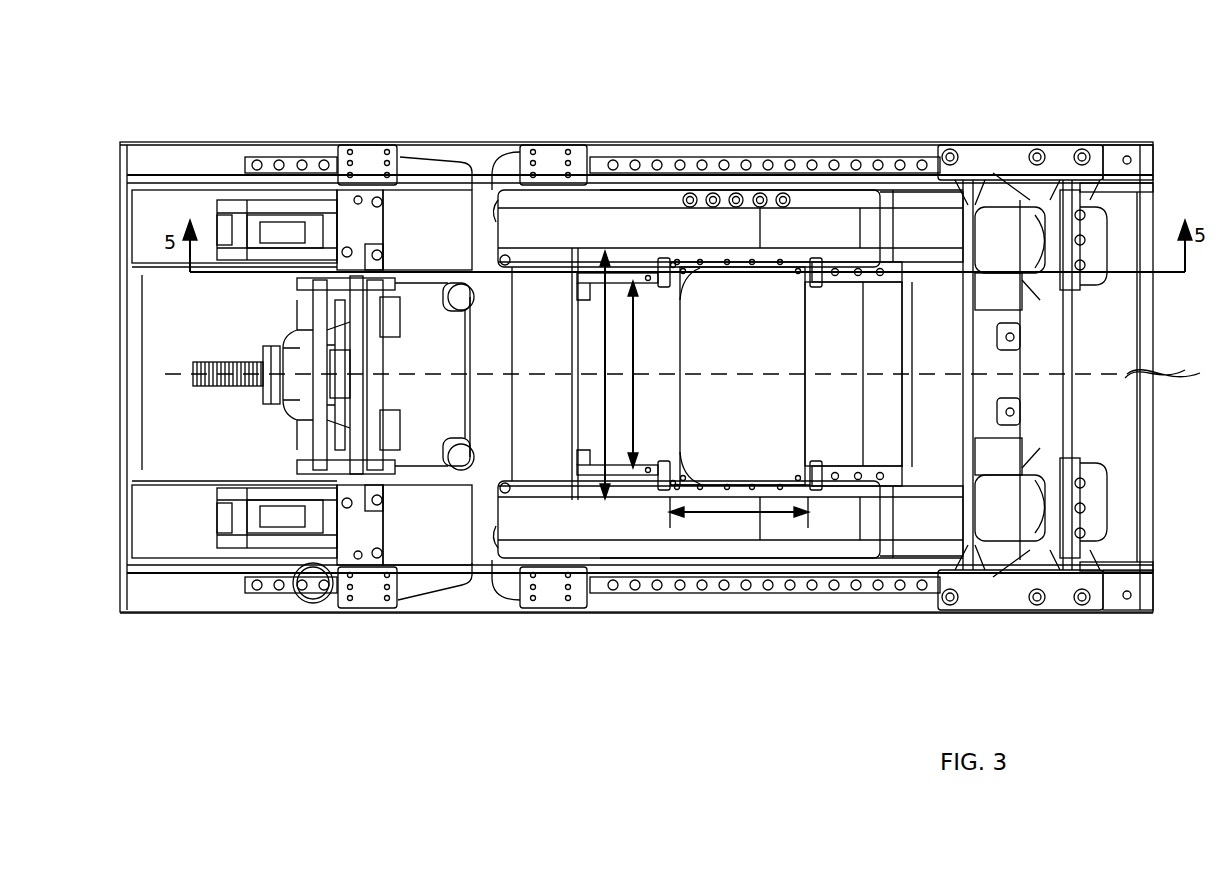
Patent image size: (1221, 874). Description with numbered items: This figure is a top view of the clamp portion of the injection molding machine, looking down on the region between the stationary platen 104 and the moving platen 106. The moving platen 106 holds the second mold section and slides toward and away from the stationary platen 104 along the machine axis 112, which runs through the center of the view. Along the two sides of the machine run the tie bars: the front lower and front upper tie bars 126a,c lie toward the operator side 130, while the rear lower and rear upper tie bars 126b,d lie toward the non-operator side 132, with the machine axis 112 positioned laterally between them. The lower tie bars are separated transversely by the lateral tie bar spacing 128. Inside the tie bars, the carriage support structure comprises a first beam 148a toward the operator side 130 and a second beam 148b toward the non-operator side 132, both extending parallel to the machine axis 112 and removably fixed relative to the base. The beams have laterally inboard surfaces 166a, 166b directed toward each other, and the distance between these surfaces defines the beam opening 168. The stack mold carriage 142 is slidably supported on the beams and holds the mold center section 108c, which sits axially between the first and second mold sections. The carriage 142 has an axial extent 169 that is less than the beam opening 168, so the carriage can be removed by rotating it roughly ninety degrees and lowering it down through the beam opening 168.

The non-operator side 132 is at (408, 78).
The operator side 130 is at (275, 653).
The moving platen 106 is at (418, 200).
The rear lower tie bar and rear upper tie bar 126b,d is at (628, 215).
The front lower tie bar and front upper tie bar 126a,c is at (610, 530).
The stationary platen 104 is at (1032, 182).
The second beam 148b is at (590, 266).
The first beam 148a is at (590, 490).
The laterally inboard surface 166b is at (590, 290).
The laterally inboard surface 166a is at (590, 463).
The beam opening 168 is at (637, 362).
The lateral tie bar spacing 128 is at (603, 362).
The axial extent 169 is at (760, 514).
The machine axis 112 is at (690, 374).
The stack mold carriage 142 is at (810, 285).
The mold center section 108c is at (788, 422).